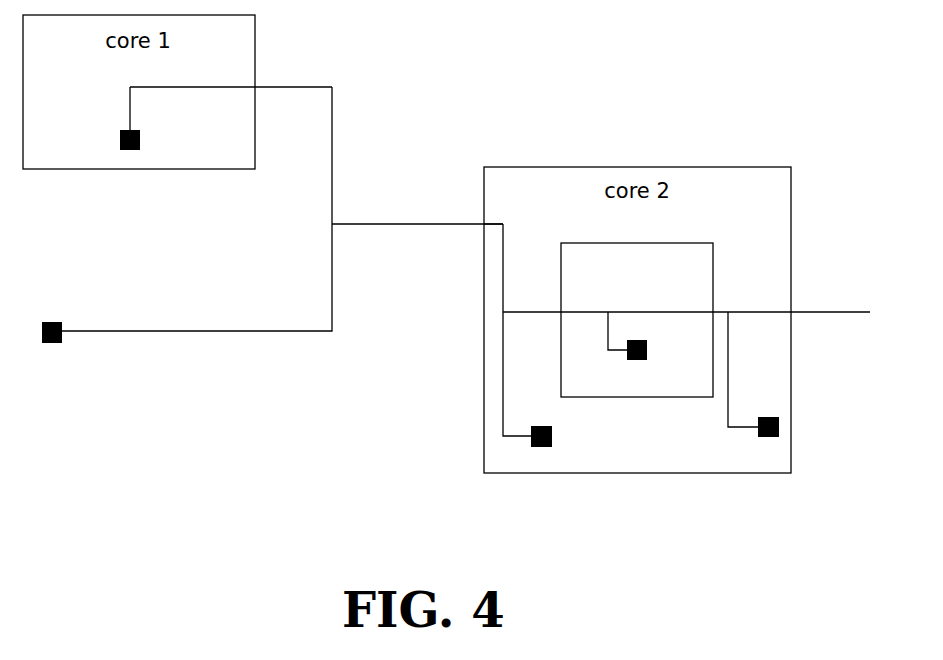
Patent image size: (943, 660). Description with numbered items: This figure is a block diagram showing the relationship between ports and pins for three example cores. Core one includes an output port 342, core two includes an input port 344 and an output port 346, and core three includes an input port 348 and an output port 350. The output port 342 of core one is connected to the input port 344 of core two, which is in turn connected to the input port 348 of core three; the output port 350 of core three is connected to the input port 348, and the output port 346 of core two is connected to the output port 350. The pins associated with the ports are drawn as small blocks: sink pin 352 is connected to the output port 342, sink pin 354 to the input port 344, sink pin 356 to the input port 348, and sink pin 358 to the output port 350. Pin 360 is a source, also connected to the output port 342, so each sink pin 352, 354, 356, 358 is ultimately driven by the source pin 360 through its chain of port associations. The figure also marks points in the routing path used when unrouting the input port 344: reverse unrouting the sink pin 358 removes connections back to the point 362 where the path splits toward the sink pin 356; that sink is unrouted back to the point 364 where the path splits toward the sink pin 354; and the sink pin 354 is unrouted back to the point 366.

The output port 342 is at (253, 82).
The input port 344 is at (485, 223).
The output port 346 is at (792, 306).
The input port 348 is at (561, 302).
The output port 350 is at (716, 301).
The pin 352 is at (60, 322).
The pin 354 is at (540, 447).
The pin 356 is at (647, 357).
The pin 358 is at (770, 437).
The pin 360 is at (133, 130).
The point 362 is at (608, 314).
The point 364 is at (503, 316).
The point 366 is at (332, 227).